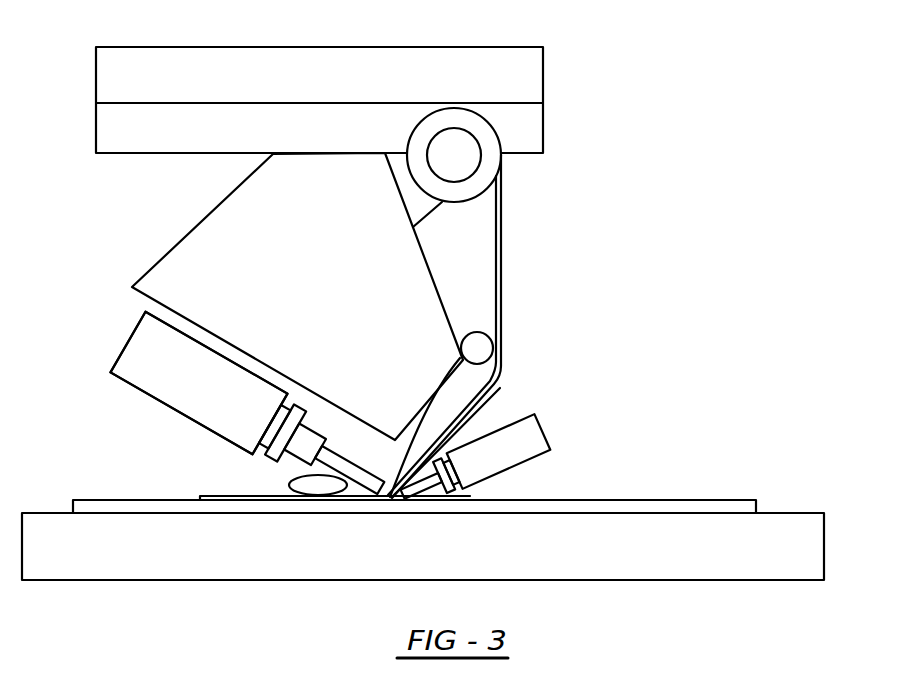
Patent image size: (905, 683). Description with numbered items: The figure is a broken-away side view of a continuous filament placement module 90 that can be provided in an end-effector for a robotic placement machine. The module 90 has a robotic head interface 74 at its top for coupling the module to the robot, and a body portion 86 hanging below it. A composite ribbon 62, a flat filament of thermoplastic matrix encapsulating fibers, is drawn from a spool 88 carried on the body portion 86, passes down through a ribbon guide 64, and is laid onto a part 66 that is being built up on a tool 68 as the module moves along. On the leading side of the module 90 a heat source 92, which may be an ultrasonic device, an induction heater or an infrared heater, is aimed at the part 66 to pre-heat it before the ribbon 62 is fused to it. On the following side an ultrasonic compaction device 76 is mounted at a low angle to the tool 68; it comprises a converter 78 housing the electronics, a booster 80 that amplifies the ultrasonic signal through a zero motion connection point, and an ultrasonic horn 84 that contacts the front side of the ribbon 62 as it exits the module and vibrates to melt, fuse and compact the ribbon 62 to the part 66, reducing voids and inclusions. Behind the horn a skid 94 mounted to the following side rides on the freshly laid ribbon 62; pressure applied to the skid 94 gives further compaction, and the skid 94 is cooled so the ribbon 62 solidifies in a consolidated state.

The ribbon 62 is at (498, 278).
The ribbon guide 64 is at (453, 397).
The part 66 is at (705, 507).
The tool 68 is at (728, 552).
The robotic head interface 74 is at (202, 60).
The ultrasonic compaction device 76 is at (146, 399).
The converter 78 is at (155, 367).
The booster 80 is at (275, 452).
The ultrasonic horn 84 is at (373, 482).
The body portion 86 is at (193, 247).
The spool 88 is at (490, 156).
The continuous filament placement module 90 is at (680, 180).
The heat source 92 is at (533, 463).
The skid 94 is at (317, 487).